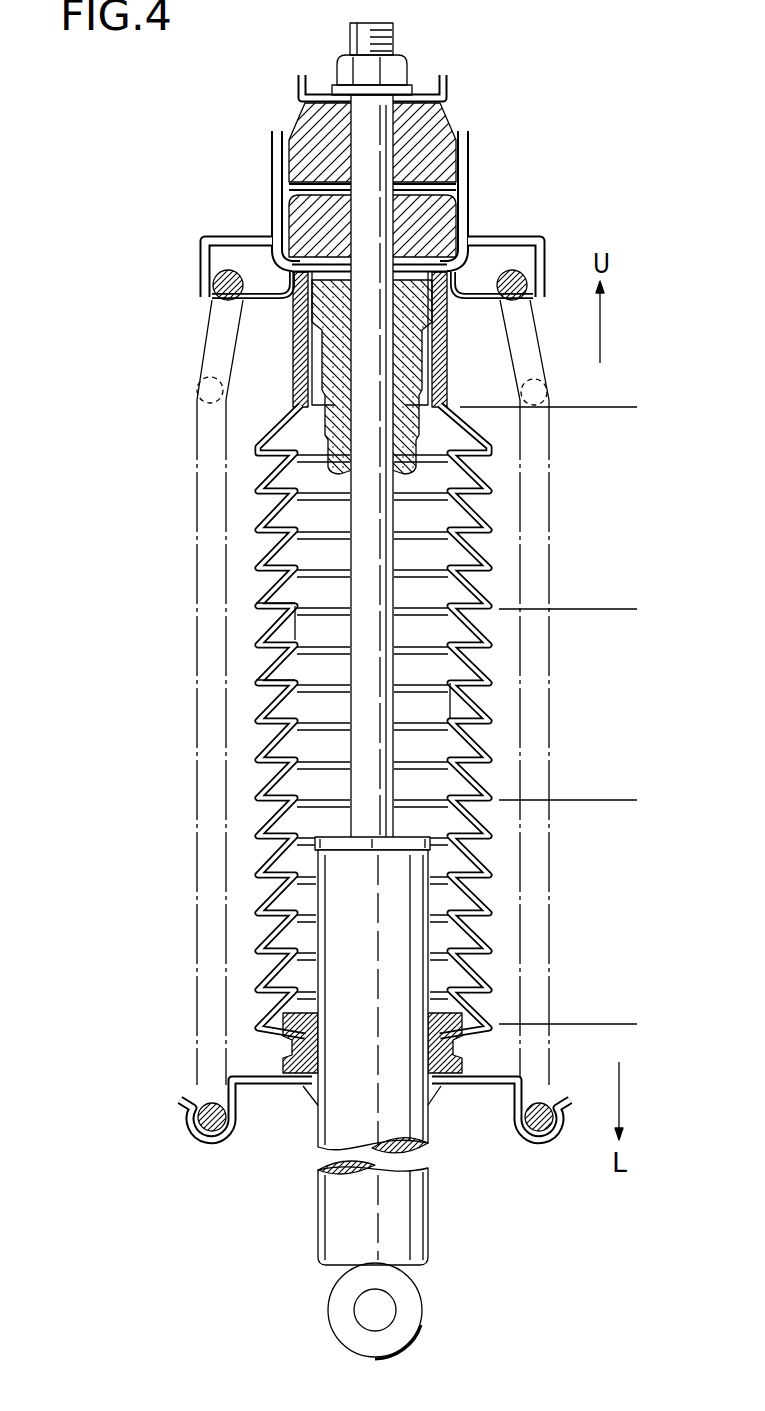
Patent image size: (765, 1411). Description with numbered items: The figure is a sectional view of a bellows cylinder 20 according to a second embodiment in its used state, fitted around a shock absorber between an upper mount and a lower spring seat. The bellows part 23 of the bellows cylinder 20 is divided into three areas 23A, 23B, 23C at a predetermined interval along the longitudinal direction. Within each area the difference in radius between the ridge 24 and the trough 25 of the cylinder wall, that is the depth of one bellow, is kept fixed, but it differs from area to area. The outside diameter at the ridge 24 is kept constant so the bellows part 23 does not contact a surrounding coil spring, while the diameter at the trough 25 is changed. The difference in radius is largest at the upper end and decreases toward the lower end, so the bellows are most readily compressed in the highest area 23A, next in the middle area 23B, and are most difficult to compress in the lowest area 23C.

The bellows cylinder 20 is at (263, 507).
The bellows part 23 is at (265, 552).
The ridge 24 is at (257, 605).
The trough 25 is at (300, 617).
The highest area 23A is at (619, 408).
The middle area 23B is at (619, 610).
The lowest area 23C is at (619, 801).